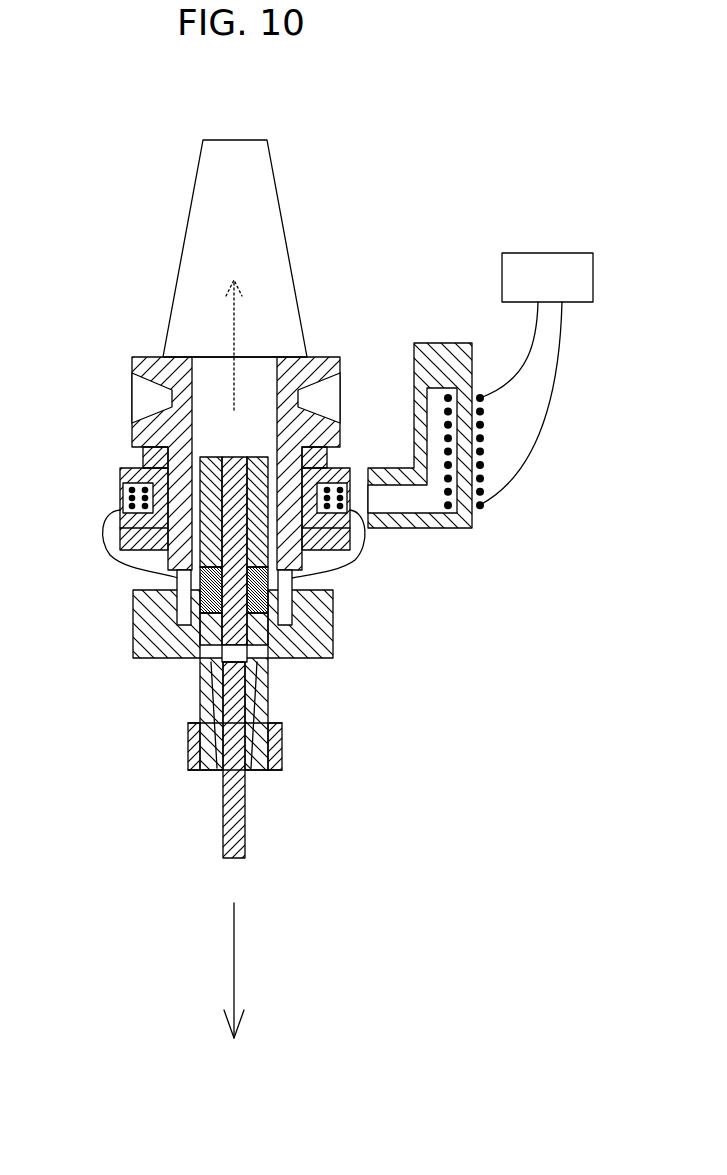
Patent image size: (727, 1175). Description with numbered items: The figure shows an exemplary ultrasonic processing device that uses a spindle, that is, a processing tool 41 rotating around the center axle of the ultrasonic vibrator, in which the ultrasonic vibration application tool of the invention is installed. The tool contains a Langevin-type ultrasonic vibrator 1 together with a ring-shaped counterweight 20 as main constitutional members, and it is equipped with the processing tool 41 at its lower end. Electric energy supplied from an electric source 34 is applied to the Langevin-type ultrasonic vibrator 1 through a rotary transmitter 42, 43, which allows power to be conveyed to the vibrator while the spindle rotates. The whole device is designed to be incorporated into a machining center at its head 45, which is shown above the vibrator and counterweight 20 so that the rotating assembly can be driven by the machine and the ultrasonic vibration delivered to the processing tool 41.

The Langevin-type ultrasonic vibrator 1 is at (277, 450).
The ring-shaped counterweight 20 is at (185, 628).
The electric source 34 is at (530, 268).
The processing tool 41 is at (230, 813).
The rotary transmitter 42 is at (440, 524).
The rotary transmitter 43 is at (128, 472).
The head 45 is at (248, 167).